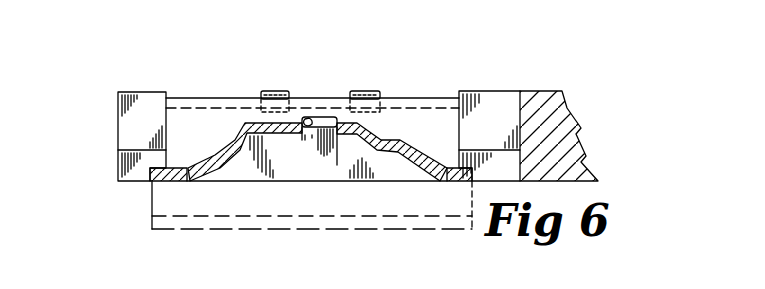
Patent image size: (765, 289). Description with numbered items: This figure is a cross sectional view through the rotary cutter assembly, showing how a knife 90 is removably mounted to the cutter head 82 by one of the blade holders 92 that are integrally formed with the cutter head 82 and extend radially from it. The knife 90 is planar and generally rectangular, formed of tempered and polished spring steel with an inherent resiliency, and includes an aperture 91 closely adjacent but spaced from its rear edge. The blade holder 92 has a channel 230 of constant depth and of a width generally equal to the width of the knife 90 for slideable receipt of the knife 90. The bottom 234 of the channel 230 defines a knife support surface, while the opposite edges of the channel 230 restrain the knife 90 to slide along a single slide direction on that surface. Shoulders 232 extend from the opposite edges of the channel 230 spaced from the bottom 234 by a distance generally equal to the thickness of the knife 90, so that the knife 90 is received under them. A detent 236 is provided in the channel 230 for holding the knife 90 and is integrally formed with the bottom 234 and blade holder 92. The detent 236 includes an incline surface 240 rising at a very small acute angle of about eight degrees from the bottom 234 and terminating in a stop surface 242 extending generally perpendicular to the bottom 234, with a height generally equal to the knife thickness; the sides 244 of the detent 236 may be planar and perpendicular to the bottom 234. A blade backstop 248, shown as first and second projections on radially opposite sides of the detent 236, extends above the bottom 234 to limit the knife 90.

The cutter head 82 is at (107, 77).
The blade holder 92 is at (112, 112).
The shoulders 232 is at (192, 83).
The bottom of channel 234 is at (266, 136).
The blade backstop 248 is at (272, 90).
The aperture 91 is at (305, 117).
The stop surface 242 is at (316, 128).
The channel 230 is at (153, 182).
The knife 90 is at (143, 207).
The sides of detent 244 is at (300, 133).
The detent 236 is at (313, 152).
The incline surface 240 is at (337, 150).